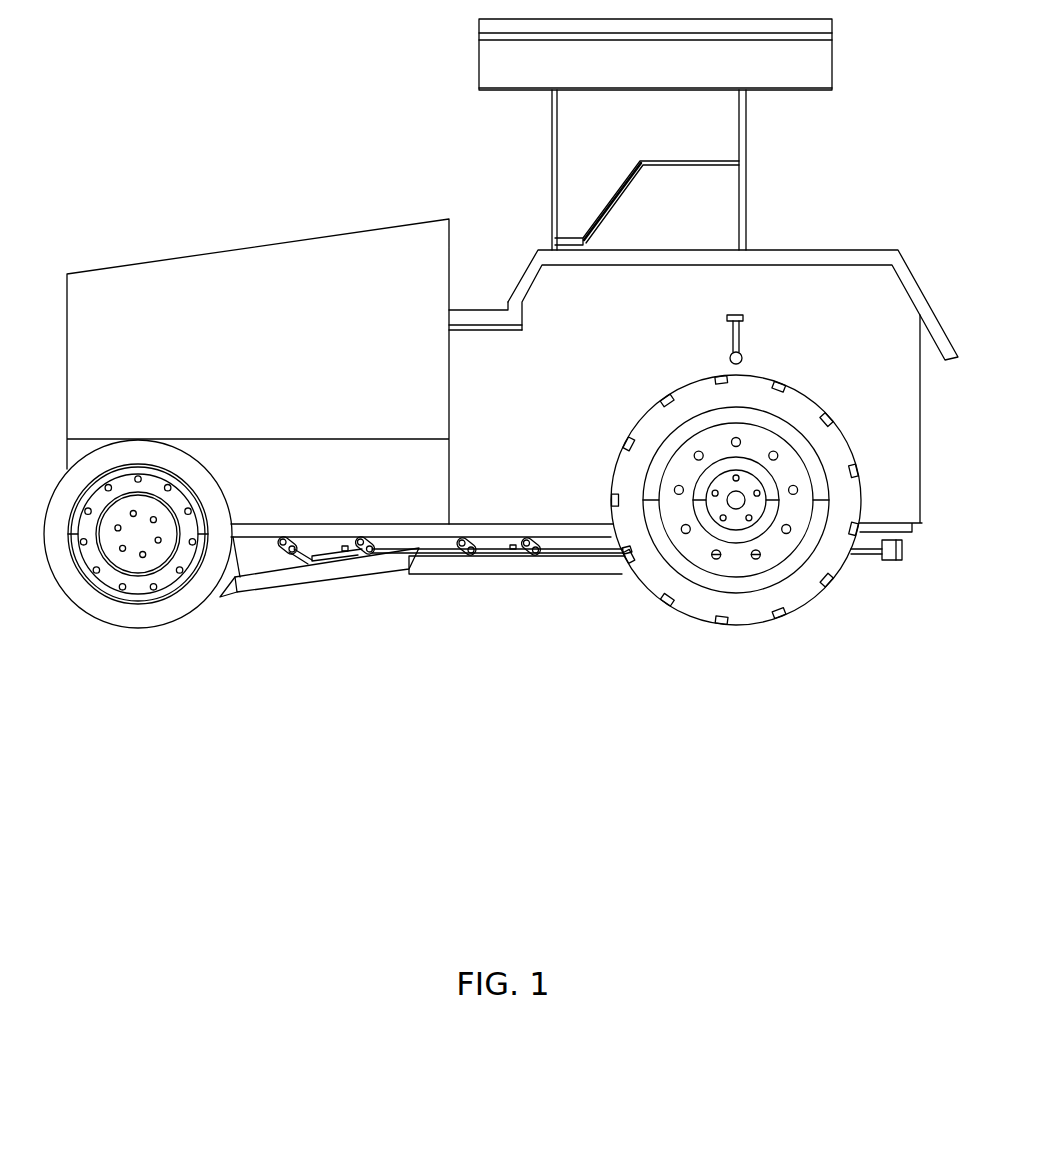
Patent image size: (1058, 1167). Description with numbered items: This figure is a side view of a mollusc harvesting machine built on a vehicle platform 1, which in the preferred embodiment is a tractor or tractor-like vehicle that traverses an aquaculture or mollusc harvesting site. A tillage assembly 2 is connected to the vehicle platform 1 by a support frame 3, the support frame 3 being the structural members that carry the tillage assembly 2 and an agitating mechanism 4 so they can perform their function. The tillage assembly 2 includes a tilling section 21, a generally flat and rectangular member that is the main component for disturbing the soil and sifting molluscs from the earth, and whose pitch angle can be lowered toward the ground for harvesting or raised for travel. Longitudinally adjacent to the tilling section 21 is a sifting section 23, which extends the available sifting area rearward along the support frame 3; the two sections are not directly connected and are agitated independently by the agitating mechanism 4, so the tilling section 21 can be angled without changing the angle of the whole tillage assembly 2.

The vehicle platform 1 is at (299, 83).
The tillage assembly 2 is at (384, 676).
The tilling section 21 is at (286, 634).
The sifting section 23 is at (568, 624).
The support frame 3 is at (524, 515).
The agitating mechanism 4 is at (895, 598).